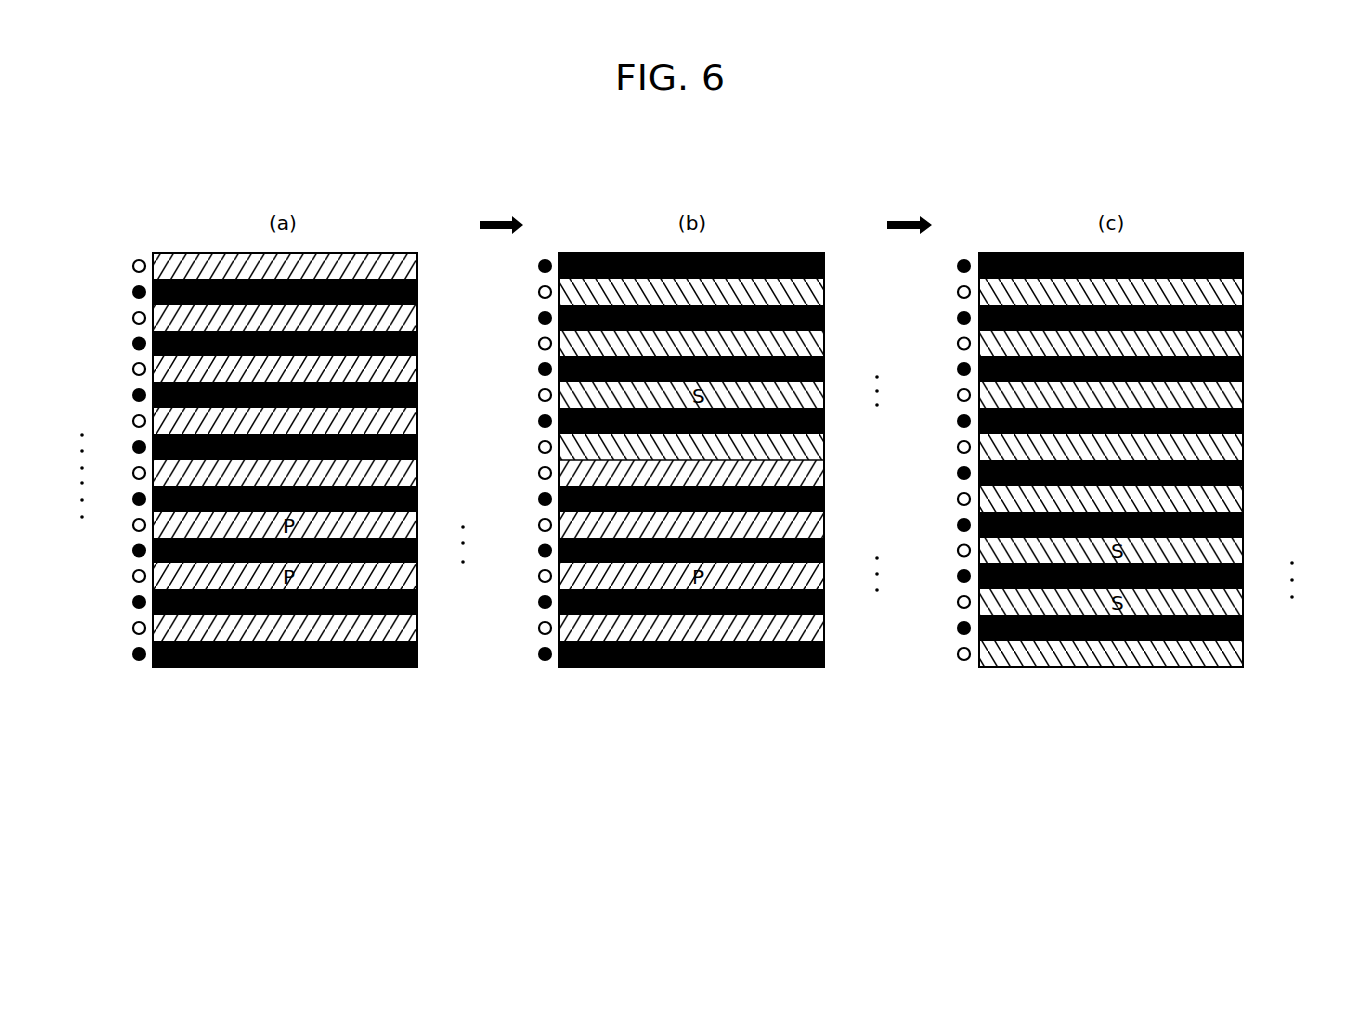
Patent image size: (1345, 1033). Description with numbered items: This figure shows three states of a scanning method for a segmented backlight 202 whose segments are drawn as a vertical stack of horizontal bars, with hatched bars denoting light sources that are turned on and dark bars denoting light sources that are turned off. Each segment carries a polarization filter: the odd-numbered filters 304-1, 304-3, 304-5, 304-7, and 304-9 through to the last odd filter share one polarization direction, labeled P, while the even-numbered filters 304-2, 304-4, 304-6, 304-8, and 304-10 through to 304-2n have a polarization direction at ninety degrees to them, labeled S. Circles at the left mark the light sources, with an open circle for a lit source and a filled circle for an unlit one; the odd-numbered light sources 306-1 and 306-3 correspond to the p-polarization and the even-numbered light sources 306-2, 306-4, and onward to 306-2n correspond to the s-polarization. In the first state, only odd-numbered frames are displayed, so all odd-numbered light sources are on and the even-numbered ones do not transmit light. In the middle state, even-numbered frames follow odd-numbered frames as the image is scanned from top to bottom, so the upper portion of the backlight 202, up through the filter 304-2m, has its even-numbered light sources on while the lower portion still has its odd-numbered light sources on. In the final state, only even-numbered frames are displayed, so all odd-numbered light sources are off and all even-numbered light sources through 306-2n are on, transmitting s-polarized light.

The backlight 202 is at (283, 672).
The polarization filter 304-1 is at (417, 267).
The polarization filter 304-2 is at (824, 292).
The polarization filter 304-3 is at (417, 318).
The polarization filter 304-4 is at (824, 344).
The polarization filter 304-5 is at (417, 369).
The polarization filter 304-6 is at (1243, 395).
The polarization filter 304-7 is at (417, 421).
The polarization filter 304-8 is at (1243, 447).
The polarization filter 304-9 is at (417, 473).
The polarization filter 304-10 is at (1243, 499).
The polarization filter 304-2m is at (824, 447).
The polarization filter 304-2n is at (1243, 654).
The light source 306-1 is at (132, 266).
The light source 306-2 is at (132, 292).
The light source 306-3 is at (132, 318).
The light source 306-4 is at (132, 344).
The light source 306-2n is at (132, 654).